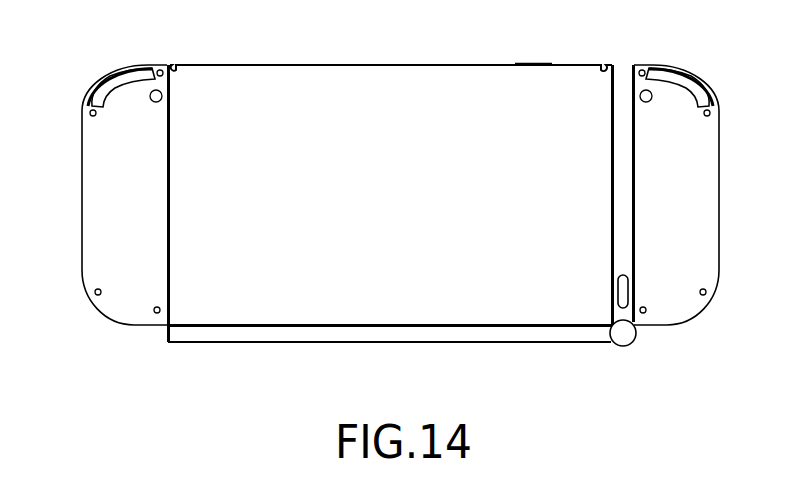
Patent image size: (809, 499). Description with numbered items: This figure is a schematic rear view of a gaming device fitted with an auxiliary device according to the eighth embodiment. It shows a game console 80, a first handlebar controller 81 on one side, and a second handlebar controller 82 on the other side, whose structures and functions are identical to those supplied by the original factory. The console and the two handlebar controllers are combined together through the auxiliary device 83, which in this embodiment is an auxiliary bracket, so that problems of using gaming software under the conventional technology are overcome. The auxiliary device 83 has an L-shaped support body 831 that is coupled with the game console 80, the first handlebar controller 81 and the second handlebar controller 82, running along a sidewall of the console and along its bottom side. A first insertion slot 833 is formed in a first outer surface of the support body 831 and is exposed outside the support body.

The game console 80 is at (466, 52).
The first handlebar controller 81 is at (109, 175).
The second handlebar controller 82 is at (692, 178).
The auxiliary device 83 is at (252, 334).
The support body 831 is at (537, 333).
The first insertion slot 833 is at (628, 278).